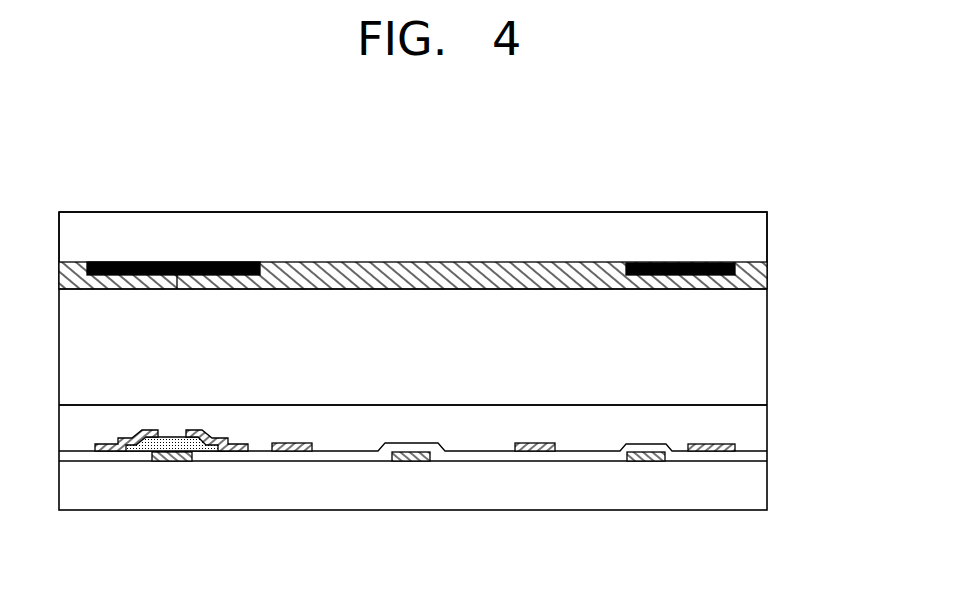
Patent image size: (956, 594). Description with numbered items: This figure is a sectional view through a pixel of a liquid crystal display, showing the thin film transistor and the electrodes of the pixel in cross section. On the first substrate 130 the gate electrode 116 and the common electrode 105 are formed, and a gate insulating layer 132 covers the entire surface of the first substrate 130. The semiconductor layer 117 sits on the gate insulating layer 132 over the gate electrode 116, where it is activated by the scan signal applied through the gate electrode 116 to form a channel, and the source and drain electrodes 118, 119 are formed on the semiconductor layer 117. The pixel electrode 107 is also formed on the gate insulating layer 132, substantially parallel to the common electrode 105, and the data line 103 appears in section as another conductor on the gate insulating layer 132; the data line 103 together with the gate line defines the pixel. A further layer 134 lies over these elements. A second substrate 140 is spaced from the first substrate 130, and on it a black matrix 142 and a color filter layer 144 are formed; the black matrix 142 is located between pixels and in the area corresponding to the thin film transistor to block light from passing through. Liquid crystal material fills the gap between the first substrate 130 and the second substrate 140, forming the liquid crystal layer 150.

The data line 103 is at (713, 451).
The common electrode 105 is at (410, 461).
The pixel electrode 107 is at (292, 451).
The gate electrode 116 is at (169, 461).
The semiconductor layer 117 is at (127, 451).
The source electrode 118 is at (100, 451).
The drain electrode 119 is at (233, 451).
The first substrate 130 is at (758, 492).
The gate insulating layer 132 is at (758, 455).
The passivation layer 134 is at (758, 417).
The second substrate 140 is at (758, 238).
The black matrix 142 is at (203, 262).
The color filter layer 144 is at (758, 278).
The liquid crystal layer 150 is at (758, 353).